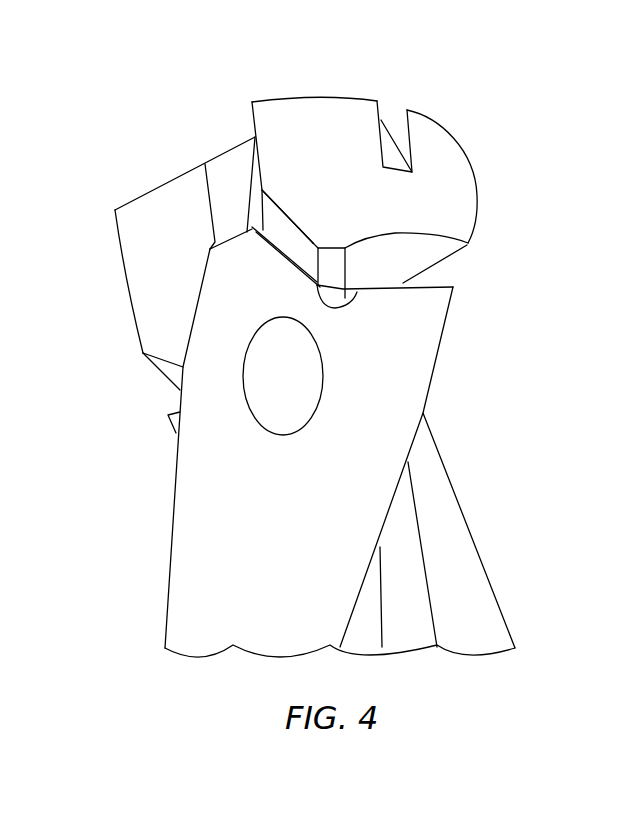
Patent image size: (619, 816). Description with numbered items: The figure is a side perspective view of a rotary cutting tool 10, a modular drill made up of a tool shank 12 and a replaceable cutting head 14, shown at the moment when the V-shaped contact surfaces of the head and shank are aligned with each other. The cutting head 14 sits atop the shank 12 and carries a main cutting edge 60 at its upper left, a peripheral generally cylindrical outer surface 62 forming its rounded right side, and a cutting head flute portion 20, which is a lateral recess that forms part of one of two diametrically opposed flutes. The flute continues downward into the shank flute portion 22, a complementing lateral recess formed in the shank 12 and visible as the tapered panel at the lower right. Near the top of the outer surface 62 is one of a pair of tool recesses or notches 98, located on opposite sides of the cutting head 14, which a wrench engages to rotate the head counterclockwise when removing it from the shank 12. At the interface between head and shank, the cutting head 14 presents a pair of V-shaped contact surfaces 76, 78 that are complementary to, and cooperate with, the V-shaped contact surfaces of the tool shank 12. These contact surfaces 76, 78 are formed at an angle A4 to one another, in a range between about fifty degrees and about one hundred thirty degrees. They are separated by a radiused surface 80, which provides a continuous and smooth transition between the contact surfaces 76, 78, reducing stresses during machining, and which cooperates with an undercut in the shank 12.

The rotary cutting tool 10 is at (85, 88).
The tool shank 12 is at (527, 550).
The cutting head 14 is at (212, 55).
The cutting head flute portion 20 is at (230, 173).
The shank flute portion 22 is at (468, 577).
The main cutting edge 60 is at (147, 193).
The peripheral generally cylindrical outer surface 62 is at (450, 170).
The V-shaped contact surface 76 is at (295, 243).
The V-shaped contact surface 78 is at (385, 263).
The radiused surface 80 is at (427, 252).
The tool recess or notch 98 is at (390, 136).
The angle between V-shaped contact surfaces A4 is at (295, 214).